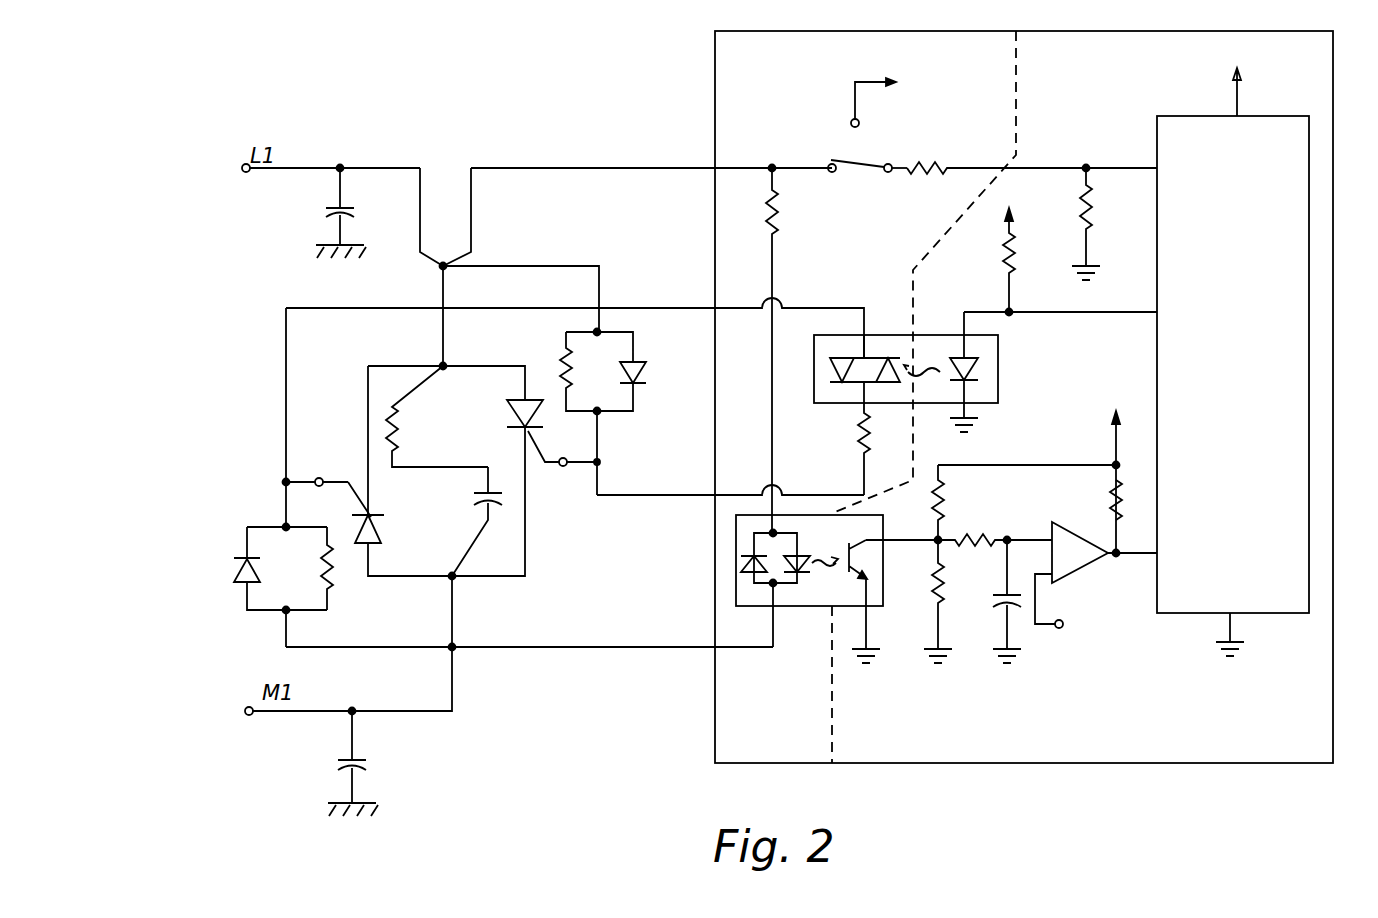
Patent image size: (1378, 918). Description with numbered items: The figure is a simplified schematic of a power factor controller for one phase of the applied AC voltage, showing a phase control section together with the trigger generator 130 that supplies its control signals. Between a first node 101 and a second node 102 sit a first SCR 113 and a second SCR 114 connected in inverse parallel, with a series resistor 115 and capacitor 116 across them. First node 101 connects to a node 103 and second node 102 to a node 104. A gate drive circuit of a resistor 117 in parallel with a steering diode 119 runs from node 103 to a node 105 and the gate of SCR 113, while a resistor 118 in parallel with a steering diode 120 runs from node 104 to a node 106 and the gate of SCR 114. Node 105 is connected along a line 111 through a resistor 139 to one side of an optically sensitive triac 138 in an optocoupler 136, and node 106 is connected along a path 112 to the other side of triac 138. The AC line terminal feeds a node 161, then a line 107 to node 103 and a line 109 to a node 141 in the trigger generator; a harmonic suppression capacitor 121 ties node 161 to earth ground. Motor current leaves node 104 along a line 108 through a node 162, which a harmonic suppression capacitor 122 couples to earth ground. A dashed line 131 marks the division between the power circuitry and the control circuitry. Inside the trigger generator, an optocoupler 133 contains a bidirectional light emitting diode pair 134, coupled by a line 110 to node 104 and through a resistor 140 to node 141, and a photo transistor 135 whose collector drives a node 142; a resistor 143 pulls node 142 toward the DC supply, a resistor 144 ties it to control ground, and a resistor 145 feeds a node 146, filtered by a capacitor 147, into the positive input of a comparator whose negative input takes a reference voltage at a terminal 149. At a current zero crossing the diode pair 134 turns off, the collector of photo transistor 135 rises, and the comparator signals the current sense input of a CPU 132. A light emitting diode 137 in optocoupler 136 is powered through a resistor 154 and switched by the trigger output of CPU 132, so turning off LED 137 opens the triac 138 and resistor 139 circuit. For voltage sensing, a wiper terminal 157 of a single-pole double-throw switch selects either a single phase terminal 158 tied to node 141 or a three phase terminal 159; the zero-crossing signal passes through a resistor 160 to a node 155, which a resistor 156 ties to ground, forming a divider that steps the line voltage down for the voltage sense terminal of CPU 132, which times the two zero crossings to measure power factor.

The first node 101 is at (443, 364).
The second node 102 is at (455, 579).
The node 103 is at (443, 267).
The node 104 is at (454, 649).
The node 105 is at (597, 462).
The node 106 is at (286, 482).
The line 107 is at (432, 140).
The line 108 is at (428, 712).
The line 109 is at (634, 168).
The line 110 is at (641, 647).
The line 111 is at (661, 495).
The path 112 is at (670, 308).
The first SCR 113 is at (513, 400).
The second SCR 114 is at (375, 545).
The resistor 115 is at (395, 448).
The capacitor 116 is at (476, 493).
The resistor 117 is at (569, 379).
The resistor 118 is at (324, 566).
The steering diode 119 is at (640, 366).
The steering diode 120 is at (246, 558).
The harmonic suppression capacitor 121 is at (331, 210).
The harmonic suppression capacitor 122 is at (341, 760).
The trigger generator 130 is at (1198, 766).
The isolation boundary 131 is at (1017, 73).
The CPU 132 is at (1200, 116).
The optocoupler 133 is at (869, 590).
The bidirectional light emitting diode pair 134 is at (777, 584).
The photo transistor 135 is at (850, 548).
The optocoupler 136 is at (998, 349).
The light emitting diode 137 is at (961, 352).
The optically sensitive triac 138 is at (859, 357).
The resistor 139 is at (860, 430).
The resistor 140 is at (779, 212).
The node 141 is at (773, 167).
The node 142 is at (938, 539).
The resistor 143 is at (940, 500).
The resistor 144 is at (938, 586).
The resistor 145 is at (976, 539).
The node 146 is at (1007, 538).
The capacitor 147 is at (1004, 595).
The terminal 149 is at (1059, 628).
The resistor 154 is at (1005, 255).
The node 155 is at (1087, 167).
The resistor 156 is at (1092, 212).
The terminal 157 is at (891, 165).
The terminal 158 is at (837, 172).
The terminal 159 is at (859, 123).
The resistor 160 is at (927, 172).
The node 161 is at (342, 167).
The node 162 is at (373, 673).